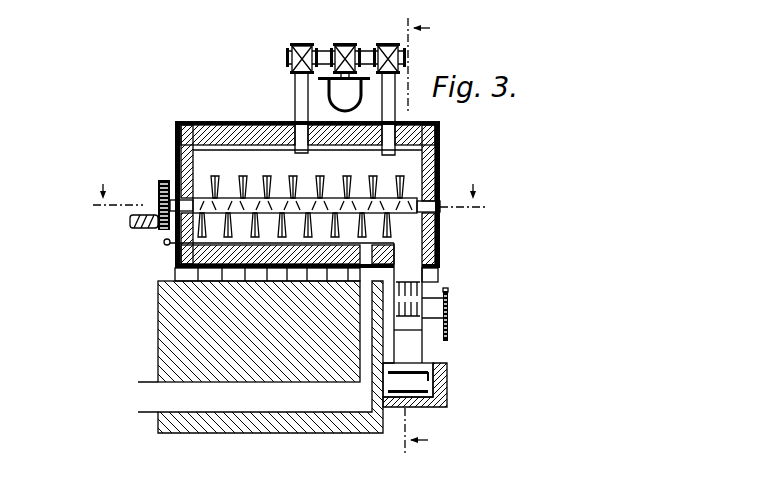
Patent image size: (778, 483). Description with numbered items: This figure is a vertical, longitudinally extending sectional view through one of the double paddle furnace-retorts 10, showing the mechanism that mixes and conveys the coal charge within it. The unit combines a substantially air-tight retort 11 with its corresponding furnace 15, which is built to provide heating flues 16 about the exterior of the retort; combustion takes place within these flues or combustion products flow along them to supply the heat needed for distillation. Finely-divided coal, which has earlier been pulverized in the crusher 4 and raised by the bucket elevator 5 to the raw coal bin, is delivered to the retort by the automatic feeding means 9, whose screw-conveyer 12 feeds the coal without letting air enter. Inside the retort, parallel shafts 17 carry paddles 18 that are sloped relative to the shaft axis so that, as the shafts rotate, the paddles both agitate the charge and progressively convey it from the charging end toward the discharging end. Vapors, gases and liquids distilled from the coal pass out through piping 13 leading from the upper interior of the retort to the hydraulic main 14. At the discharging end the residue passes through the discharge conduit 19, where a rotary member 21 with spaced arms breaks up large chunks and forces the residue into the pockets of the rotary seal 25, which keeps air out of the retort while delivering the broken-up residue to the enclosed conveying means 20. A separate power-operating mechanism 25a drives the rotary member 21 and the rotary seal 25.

The crusher 4 is at (288, 203).
The bucket elevator 5 is at (414, 238).
The automatic feeding means 9 is at (130, 222).
The double paddle furnace-retort 10 is at (193, 116).
The retort 11 is at (437, 156).
The screw-conveyer 12 is at (145, 231).
The piping 13 is at (300, 100).
The hydraulic main 14 is at (332, 97).
The furnace 15 is at (200, 150).
The heating flues 16 is at (175, 262).
The parallel shafts 17 is at (413, 214).
The paddles 18 is at (205, 213).
The discharge conduit 19 is at (405, 266).
The enclosed conveying means 20 is at (447, 381).
The rotary member 21 is at (422, 287).
The rotary seal 25 is at (408, 331).
The power-operating mechanism 25a is at (450, 330).